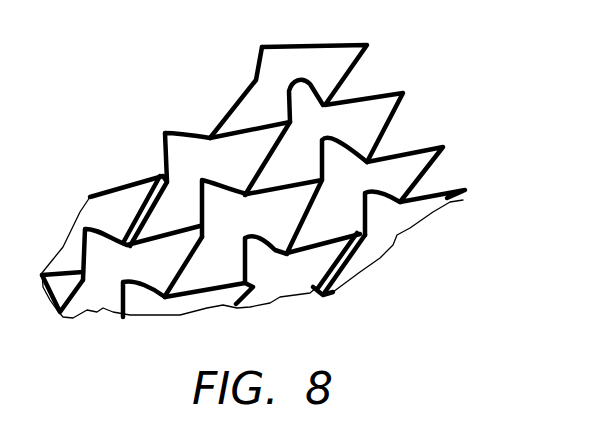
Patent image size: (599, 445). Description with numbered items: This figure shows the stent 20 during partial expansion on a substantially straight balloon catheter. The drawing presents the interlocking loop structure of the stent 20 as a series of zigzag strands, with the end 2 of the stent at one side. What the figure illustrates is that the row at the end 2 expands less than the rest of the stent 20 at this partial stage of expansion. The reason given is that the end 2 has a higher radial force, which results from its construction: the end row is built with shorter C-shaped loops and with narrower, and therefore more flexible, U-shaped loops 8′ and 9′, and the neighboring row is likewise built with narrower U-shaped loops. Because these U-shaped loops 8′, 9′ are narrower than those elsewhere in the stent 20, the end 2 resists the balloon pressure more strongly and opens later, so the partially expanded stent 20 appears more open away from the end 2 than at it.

The U-shaped loop 8′ is at (258, 46).
The U-shaped loop 9′ is at (290, 90).
The stent 20 is at (447, 148).
The end of the stent 2 is at (470, 196).